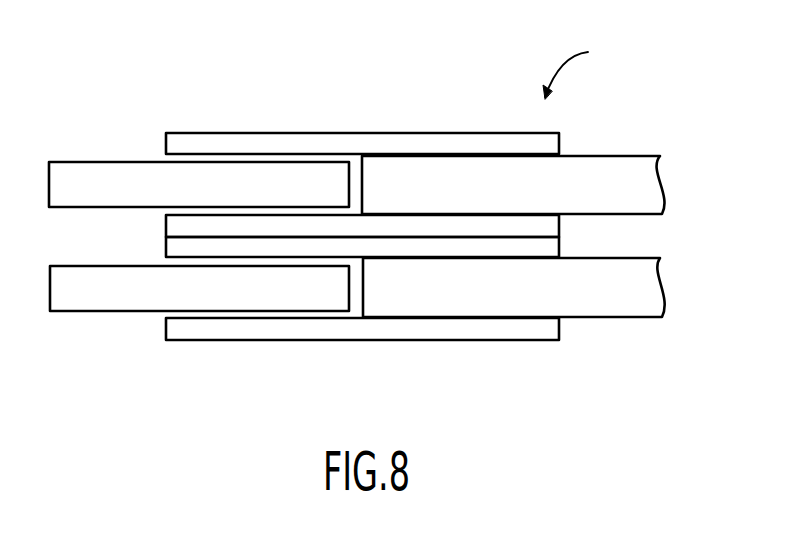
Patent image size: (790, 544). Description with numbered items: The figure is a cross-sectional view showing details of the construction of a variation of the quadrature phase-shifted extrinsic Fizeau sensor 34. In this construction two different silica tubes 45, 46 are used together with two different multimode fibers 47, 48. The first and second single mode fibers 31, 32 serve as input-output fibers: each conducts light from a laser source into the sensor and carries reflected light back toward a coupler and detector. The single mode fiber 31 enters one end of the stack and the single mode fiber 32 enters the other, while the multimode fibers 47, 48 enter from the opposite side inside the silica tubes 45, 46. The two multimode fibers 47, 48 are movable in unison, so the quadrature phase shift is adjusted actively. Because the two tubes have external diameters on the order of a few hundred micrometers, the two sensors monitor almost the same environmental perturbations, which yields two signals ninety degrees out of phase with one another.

The Fizeau sensor 34 is at (578, 68).
The first single mode fiber 31 is at (73, 162).
The second single mode fiber 32 is at (82, 312).
The silica tube 45 is at (357, 133).
The silica tube 46 is at (305, 341).
The multimode fiber 47 is at (622, 156).
The multimode fiber 48 is at (622, 318).